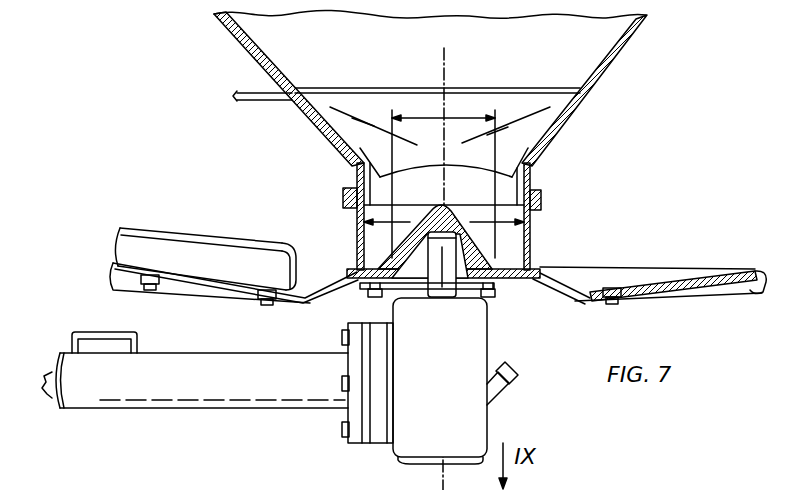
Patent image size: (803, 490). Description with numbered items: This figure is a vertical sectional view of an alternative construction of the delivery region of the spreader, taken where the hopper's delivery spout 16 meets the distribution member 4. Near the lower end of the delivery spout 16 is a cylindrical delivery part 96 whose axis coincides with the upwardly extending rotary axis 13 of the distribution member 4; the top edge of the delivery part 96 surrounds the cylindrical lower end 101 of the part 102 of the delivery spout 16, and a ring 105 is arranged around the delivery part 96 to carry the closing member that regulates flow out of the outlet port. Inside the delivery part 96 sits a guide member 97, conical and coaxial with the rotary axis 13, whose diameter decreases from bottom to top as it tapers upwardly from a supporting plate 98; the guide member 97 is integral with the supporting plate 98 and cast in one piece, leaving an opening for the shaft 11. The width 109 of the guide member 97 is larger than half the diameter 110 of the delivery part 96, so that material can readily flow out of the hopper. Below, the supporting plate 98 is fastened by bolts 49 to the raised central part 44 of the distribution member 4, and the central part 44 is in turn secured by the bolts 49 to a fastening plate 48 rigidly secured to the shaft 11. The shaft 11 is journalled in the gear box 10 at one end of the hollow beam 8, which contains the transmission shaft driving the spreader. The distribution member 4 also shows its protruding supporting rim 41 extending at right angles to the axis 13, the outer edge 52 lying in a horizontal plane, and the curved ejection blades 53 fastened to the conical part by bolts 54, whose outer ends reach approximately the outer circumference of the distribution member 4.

The distribution member 4 is at (728, 302).
The hollow beam 8 is at (182, 408).
The gear box 10 is at (481, 352).
The shaft 11 is at (447, 298).
The rotary axis 13 is at (447, 66).
The delivery spout 16 is at (442, 88).
The supporting rim 41 is at (583, 270).
The central part 44 is at (550, 303).
The fastening plate 48 is at (493, 306).
The bolts 49 is at (373, 303).
The outer edge 52 is at (697, 269).
The ejection blades 53 is at (184, 234).
The bolts 54 is at (257, 298).
The delivery part 96 is at (531, 234).
The guide member 97 is at (460, 212).
The supporting plate 98 is at (531, 256).
The cylindrical lower end 101 is at (540, 177).
The part of the delivery spout 102 is at (573, 122).
The ring 105 is at (343, 198).
The width 109 is at (437, 118).
The diameter 110 is at (408, 222).